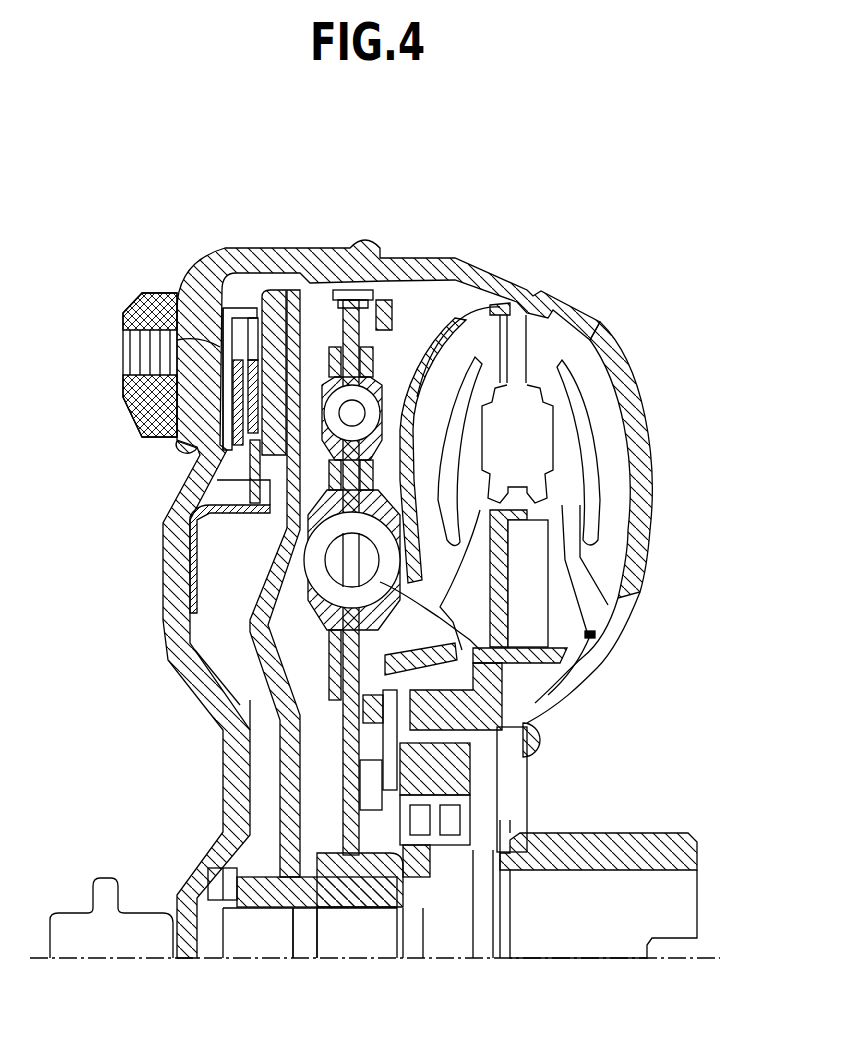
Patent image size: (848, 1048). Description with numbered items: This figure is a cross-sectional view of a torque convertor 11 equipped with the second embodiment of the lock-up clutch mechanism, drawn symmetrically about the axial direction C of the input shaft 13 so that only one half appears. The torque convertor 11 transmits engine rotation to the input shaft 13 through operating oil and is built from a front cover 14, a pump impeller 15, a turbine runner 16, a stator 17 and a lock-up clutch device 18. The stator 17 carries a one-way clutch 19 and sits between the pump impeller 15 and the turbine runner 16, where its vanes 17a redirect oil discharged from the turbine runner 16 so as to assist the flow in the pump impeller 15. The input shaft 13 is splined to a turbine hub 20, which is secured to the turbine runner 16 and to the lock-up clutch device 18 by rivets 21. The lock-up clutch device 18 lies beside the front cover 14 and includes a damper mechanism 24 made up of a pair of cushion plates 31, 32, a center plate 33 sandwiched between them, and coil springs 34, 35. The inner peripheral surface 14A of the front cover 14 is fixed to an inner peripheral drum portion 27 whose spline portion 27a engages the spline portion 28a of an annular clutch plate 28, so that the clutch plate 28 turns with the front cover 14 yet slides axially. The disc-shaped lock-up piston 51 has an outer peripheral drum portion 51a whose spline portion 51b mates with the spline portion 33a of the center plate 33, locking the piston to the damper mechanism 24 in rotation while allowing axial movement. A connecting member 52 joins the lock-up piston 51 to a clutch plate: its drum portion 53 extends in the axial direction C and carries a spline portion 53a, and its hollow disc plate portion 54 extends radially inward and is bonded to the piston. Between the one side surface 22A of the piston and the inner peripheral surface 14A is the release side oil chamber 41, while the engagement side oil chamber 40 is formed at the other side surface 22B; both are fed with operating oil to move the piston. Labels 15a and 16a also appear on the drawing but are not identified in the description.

The torque convertor 11 is at (386, 561).
The input shaft 13 is at (657, 862).
The front cover 14 is at (165, 622).
The inner peripheral surface 14A is at (200, 642).
The pump impeller 15 is at (618, 362).
The turbine blade 15a is at (614, 460).
The turbine runner 16 is at (437, 340).
The turbine hub bearing 16a is at (495, 345).
The stator 17 is at (505, 676).
The vanes 17a is at (535, 617).
The lock-up clutch device 18 is at (270, 857).
The one-way clutch 19 is at (438, 845).
The turbine hub 20 is at (357, 778).
The rivets 21 is at (365, 722).
The one side surface 22A is at (250, 696).
The other side surface 22B is at (305, 850).
The damper mechanism 24 is at (386, 300).
The inner peripheral drum portion 27 is at (188, 532).
The spline portion 27a is at (228, 493).
The clutch plate 28 is at (232, 460).
The spline portion 28a is at (262, 520).
The cushion plate 31 is at (332, 605).
The cushion plate 32 is at (353, 687).
The center plate 33 is at (331, 318).
The spline portion 33a is at (353, 290).
The coil spring 34 is at (378, 577).
The coil spring 35 is at (370, 408).
The engagement side oil chamber 40 is at (340, 848).
The release side oil chamber 41 is at (228, 880).
The lock-up piston 51 is at (278, 733).
The outer peripheral drum portion 51a is at (310, 292).
The spline portion 51b is at (377, 322).
The connecting member 52 is at (274, 290).
The drum portion 53 is at (237, 305).
The spline portion 53a is at (203, 292).
The hollow disc plate portion 54 is at (277, 420).
The axial direction C is at (710, 955).